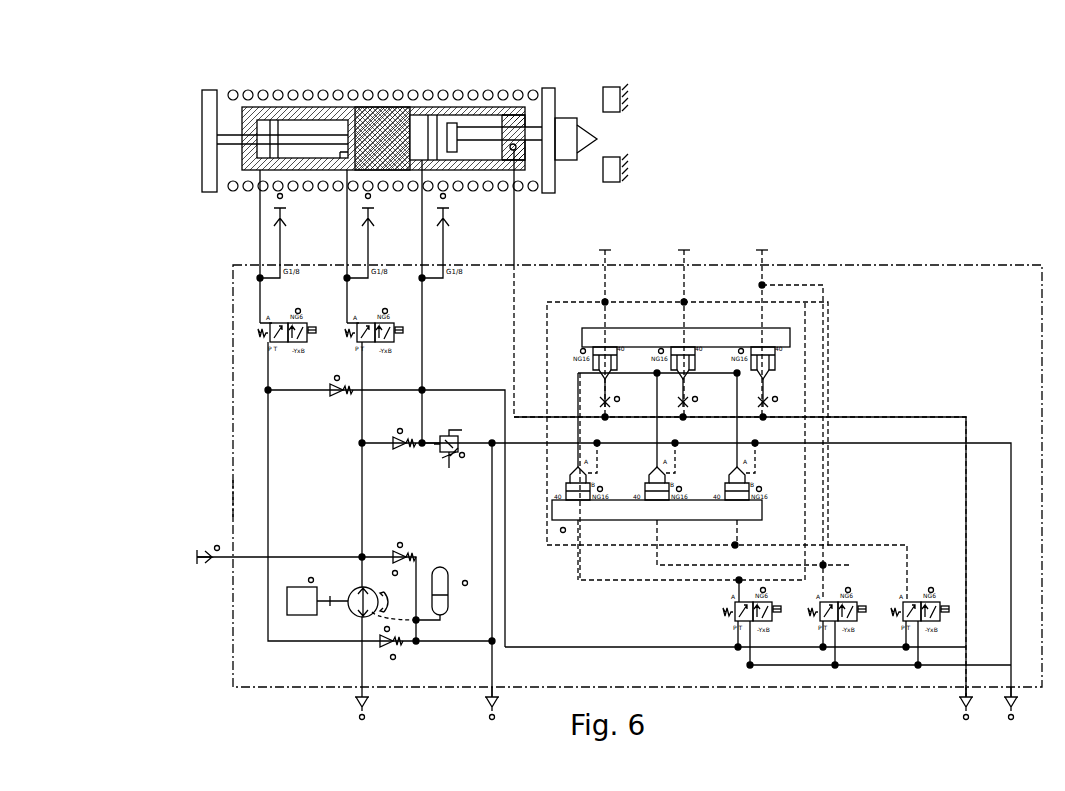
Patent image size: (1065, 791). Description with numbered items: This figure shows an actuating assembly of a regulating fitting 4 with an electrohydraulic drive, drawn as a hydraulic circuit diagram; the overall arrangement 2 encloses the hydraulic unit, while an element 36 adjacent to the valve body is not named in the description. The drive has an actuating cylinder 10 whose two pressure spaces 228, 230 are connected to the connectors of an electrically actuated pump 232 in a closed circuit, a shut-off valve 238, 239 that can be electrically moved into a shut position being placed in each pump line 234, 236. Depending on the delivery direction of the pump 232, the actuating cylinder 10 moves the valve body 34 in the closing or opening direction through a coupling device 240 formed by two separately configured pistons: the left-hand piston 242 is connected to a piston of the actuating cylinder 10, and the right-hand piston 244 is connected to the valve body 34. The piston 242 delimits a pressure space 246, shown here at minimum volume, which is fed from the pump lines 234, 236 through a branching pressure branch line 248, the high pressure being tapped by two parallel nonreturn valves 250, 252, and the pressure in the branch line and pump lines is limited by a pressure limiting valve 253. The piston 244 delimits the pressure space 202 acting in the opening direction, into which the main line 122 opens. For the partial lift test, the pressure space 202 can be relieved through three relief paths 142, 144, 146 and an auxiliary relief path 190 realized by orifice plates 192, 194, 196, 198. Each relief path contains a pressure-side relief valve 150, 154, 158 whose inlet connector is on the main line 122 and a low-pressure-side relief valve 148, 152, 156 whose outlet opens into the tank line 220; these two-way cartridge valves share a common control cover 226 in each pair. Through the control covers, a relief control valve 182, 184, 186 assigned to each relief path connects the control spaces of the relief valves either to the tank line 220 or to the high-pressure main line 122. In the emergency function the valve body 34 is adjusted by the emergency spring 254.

The hydraulic system 2 is at (862, 265).
The regulating fitting 4 is at (372, 82).
The actuating cylinder 10 is at (282, 125).
The valve body 34 is at (565, 122).
The workpiece wall 36 is at (612, 105).
The main line 122 is at (880, 417).
The relief path 142 is at (612, 345).
The relief path 144 is at (692, 345).
The relief path 146 is at (775, 380).
The low-pressure-side relief valve 148 is at (562, 522).
The pressure-side relief valve 150 is at (582, 335).
The low-pressure-side relief valve 152 is at (645, 522).
The pressure-side relief valve 154 is at (700, 320).
The low-pressure-side relief valve 156 is at (790, 470).
The pressure-side relief valve 158 is at (775, 350).
The relief control valve 182 is at (748, 668).
The relief control valve 184 is at (834, 668).
The relief control valve 186 is at (917, 668).
The auxiliary relief path 190 is at (657, 385).
The orifice plate 192 is at (650, 320).
The orifice plate 194 is at (725, 385).
The orifice plate 196 is at (745, 320).
The orifice plate 198 is at (790, 330).
The pressure space 202 is at (488, 118).
The tank line 220 is at (940, 443).
The control cover 226 is at (548, 302).
The pressure space 228 is at (320, 125).
The pressure space 230 is at (210, 100).
The pump 232 is at (355, 610).
The pump line 234 is at (240, 480).
The pump line 236 is at (362, 495).
The shut-off valve 238 is at (262, 330).
The shut-off valve 239 is at (350, 322).
The coupling device 240 is at (445, 113).
The left-hand piston 242 is at (422, 160).
The right-hand piston 244 is at (455, 160).
The pressure space 246 is at (405, 115).
The pressure branch line 248 is at (423, 360).
The nonreturn valve 250 is at (337, 398).
The nonreturn valve 252 is at (430, 448).
The pressure limiting valve 253 is at (455, 470).
The emergency spring 254 is at (233, 196).